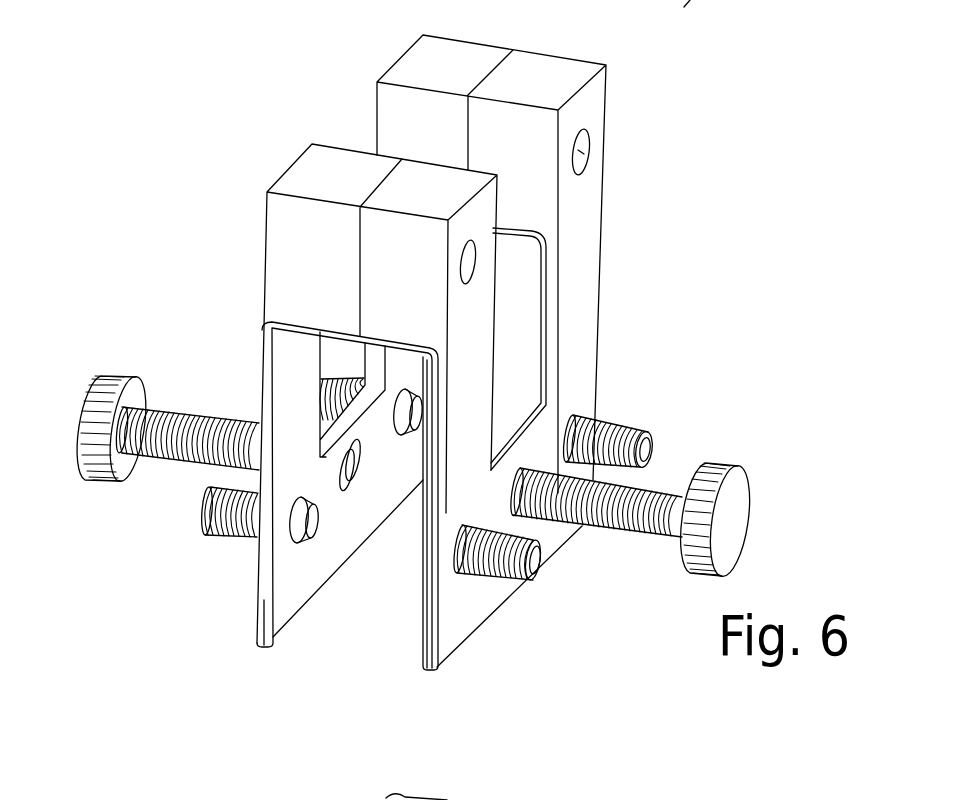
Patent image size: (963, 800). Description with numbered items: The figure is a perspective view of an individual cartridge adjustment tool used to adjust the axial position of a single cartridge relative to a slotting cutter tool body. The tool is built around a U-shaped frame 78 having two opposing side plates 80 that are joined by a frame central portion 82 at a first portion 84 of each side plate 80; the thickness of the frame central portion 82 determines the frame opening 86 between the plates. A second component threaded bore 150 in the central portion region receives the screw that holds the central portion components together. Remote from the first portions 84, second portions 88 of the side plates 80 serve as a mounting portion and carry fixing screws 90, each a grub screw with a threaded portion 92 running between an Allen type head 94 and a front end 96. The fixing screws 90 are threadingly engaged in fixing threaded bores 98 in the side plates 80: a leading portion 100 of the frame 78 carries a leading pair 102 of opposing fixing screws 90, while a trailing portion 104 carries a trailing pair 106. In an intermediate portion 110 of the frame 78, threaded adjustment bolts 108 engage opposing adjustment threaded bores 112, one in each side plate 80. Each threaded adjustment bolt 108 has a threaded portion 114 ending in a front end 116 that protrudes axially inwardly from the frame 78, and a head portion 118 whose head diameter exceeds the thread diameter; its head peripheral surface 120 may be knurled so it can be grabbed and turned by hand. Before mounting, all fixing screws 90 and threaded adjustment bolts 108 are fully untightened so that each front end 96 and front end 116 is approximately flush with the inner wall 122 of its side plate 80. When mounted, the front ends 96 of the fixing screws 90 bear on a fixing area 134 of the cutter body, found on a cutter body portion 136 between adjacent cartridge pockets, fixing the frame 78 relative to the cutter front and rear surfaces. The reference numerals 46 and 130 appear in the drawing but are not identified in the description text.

The support element 46 is at (422, 790).
The U-shaped frame 78 is at (583, 233).
The side plates 80 is at (578, 287).
The frame central portion 82 is at (305, 238).
The first portion 84 is at (265, 225).
The frame opening 86 is at (332, 660).
The second portions 88 is at (258, 607).
The fixing screws 90 is at (533, 580).
The threaded portion 92 is at (490, 577).
The Allen type head 94 is at (541, 563).
The front end 96 is at (313, 527).
The fixing threaded bores 98 is at (302, 548).
The leading portion 100 is at (343, 668).
The leading pair 102 is at (165, 520).
The trailing portion 104 is at (640, 97).
The trailing pair 106 is at (672, 427).
The threaded adjustment bolts 108 is at (100, 372).
The intermediate portion 110 is at (553, 535).
The adjustment threaded bores 112 is at (355, 480).
The threaded portion 114 is at (650, 533).
The front end 116 is at (358, 460).
The head portion 118 is at (738, 507).
The head peripheral surface 120 is at (98, 463).
The inner wall 122 is at (280, 610).
The clamping arrangement 130 is at (342, 118).
The fixing area 134 is at (383, 799).
The cutter body portion 136 is at (512, 792).
The second component threaded bore 150 is at (584, 153).